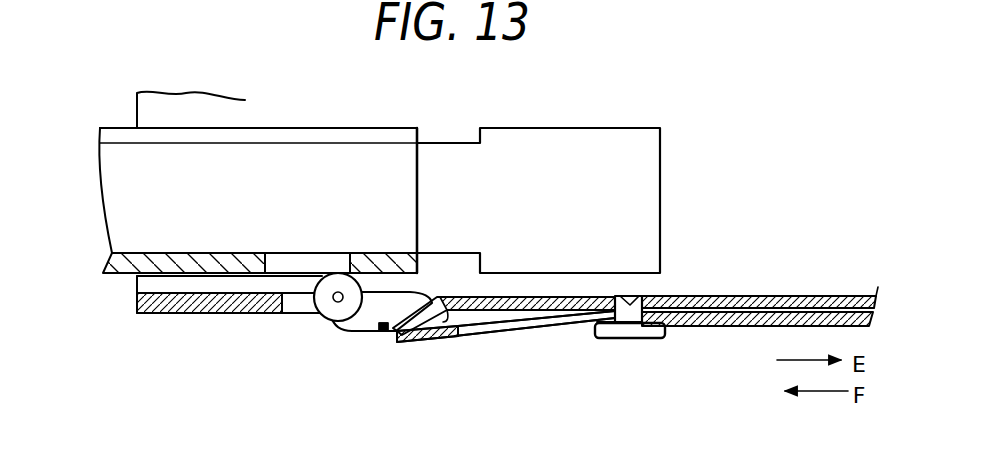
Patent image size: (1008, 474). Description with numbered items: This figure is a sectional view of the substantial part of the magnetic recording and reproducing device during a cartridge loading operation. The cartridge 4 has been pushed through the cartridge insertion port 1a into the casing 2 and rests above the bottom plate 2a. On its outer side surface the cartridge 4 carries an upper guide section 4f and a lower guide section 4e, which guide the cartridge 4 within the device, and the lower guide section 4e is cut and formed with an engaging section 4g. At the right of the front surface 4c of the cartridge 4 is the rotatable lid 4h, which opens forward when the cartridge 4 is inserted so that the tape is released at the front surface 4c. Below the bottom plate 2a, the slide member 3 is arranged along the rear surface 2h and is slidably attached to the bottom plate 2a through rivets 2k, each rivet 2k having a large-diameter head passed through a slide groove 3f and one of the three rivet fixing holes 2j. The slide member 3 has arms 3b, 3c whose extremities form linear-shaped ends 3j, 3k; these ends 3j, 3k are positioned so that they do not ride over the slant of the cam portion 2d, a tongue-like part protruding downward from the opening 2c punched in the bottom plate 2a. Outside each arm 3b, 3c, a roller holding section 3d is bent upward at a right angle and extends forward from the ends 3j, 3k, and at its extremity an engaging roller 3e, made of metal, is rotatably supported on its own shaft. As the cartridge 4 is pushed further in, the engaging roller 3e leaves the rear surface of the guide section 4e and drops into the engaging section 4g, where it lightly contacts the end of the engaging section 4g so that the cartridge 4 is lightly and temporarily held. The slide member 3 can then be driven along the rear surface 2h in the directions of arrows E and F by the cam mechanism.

The cartridge insertion port 1a is at (133, 280).
The casing 2 is at (816, 286).
The bottom plate 2a is at (180, 314).
The opening 2c is at (297, 303).
The cam portion 2d is at (382, 332).
The rear surface 2h is at (232, 314).
The rivet fixing hole 2j is at (641, 297).
The rivet 2k is at (637, 333).
The slide member 3 is at (747, 332).
The arm 3b is at (553, 329).
The arm 3c is at (535, 362).
The roller holding section 3d is at (367, 308).
The engaging roller 3e is at (323, 319).
The slide groove 3f is at (493, 329).
The end 3j is at (398, 342).
The end 3k is at (417, 369).
The cartridge 4 is at (374, 158).
The front surface 4c is at (418, 203).
The guide section 4e is at (375, 260).
The guide section 4f is at (345, 137).
The engaging section 4g is at (283, 260).
The rotatable lid 4h is at (630, 200).